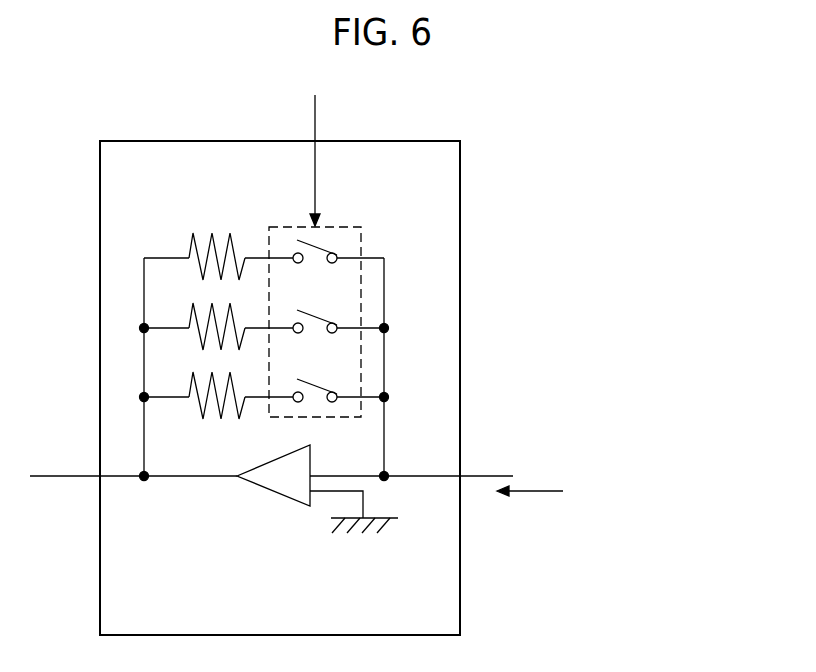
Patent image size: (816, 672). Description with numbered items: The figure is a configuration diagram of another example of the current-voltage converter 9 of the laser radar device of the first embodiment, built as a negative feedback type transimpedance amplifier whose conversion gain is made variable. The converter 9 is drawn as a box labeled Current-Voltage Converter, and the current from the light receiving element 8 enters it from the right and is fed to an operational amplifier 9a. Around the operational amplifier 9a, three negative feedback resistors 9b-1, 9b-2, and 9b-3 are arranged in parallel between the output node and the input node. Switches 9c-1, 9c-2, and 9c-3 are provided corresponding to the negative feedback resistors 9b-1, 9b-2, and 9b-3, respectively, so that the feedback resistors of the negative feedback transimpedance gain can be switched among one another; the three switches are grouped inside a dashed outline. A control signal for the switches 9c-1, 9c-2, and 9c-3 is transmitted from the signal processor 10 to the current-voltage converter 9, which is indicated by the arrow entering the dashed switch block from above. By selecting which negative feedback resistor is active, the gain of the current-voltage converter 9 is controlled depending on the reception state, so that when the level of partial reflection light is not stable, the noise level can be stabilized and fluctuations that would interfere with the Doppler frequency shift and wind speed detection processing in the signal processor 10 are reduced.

The current-voltage converter 9 is at (143, 141).
The operational amplifier 9a is at (268, 493).
The negative feedback resistor 9b-1 is at (198, 265).
The negative feedback resistor 9b-2 is at (198, 335).
The negative feedback resistor 9b-3 is at (198, 404).
The switch 9c-1 is at (337, 257).
The switch 9c-2 is at (337, 327).
The switch 9c-3 is at (337, 396).
The signal processor 10 is at (315, 146).
The light receiving element 8 is at (639, 502).